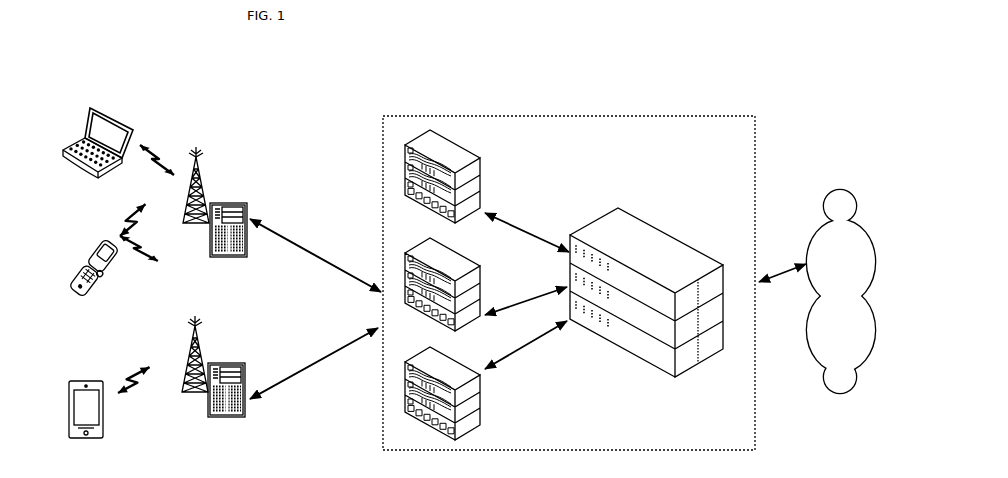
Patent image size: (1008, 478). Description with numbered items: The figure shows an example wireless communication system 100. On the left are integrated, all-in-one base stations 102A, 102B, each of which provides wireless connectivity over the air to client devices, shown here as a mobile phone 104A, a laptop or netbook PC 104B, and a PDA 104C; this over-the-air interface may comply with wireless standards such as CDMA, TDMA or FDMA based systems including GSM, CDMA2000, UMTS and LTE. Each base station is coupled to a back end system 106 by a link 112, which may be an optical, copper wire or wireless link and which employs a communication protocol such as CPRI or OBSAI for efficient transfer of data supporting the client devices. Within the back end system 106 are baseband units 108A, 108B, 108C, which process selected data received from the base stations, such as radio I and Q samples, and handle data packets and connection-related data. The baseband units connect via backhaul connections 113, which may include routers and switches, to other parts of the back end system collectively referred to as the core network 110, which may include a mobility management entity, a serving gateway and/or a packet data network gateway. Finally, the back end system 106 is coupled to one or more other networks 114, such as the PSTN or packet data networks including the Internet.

The wireless communication system 100 is at (213, 48).
The integrated base station 102A is at (231, 185).
The integrated base station 102B is at (231, 353).
The mobile phone 104A is at (110, 273).
The laptop or netbook PC 104B is at (119, 111).
The PDA 104C is at (103, 420).
The back end system 106 is at (537, 116).
The baseband unit 108A is at (480, 183).
The baseband unit 108B is at (480, 289).
The baseband unit 108C is at (480, 403).
The core network 110 is at (635, 208).
The link 112 is at (272, 237).
The backhaul connection 113 is at (525, 227).
The other network 114 is at (838, 189).